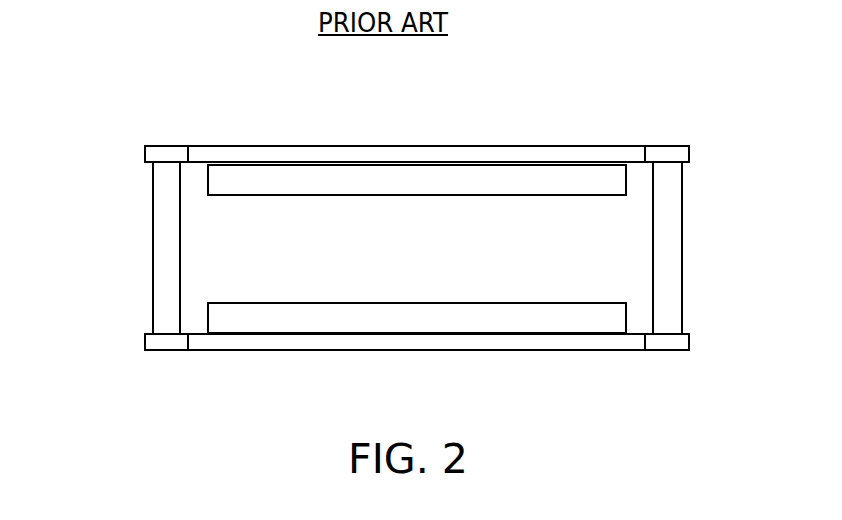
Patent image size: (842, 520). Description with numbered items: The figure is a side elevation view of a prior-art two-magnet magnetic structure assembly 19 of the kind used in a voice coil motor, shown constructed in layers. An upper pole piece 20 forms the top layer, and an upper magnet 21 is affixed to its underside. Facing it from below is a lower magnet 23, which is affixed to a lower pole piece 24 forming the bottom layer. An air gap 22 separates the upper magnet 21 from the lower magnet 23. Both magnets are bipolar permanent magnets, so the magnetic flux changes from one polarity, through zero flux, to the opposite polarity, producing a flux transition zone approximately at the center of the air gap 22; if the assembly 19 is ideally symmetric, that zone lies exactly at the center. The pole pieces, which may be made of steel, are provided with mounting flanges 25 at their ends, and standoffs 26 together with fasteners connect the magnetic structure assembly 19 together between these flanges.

The magnetic structure assembly 19 is at (258, 123).
The upper pole piece 20 is at (402, 155).
The upper magnet 21 is at (522, 183).
The air gap 22 is at (528, 268).
The lower magnet 23 is at (518, 315).
The lower pole piece 24 is at (403, 340).
The mounting flanges 25 is at (172, 157).
The standoffs 26 is at (170, 257).